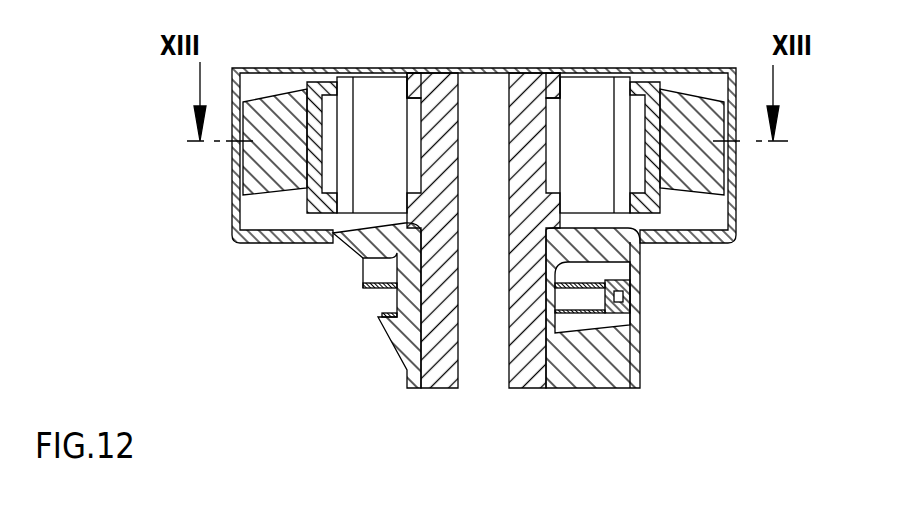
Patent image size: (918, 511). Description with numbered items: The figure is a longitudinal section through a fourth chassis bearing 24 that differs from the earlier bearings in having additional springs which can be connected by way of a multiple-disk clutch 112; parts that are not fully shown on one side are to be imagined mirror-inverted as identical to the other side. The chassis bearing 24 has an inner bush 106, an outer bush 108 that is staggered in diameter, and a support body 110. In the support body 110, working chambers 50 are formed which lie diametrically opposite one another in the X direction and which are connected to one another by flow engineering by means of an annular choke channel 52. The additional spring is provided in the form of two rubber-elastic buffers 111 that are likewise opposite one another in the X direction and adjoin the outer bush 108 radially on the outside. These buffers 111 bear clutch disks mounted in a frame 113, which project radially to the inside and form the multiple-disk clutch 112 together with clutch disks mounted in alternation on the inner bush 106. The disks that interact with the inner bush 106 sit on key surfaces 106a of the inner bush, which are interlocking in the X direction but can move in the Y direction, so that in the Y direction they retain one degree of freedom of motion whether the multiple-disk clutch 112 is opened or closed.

The chassis bearing 24 is at (254, 323).
The working chambers 50 is at (380, 297).
The annular choke channel 52 is at (622, 297).
The inner bush 106 is at (522, 360).
The key surfaces 106a is at (543, 133).
The outer bush 108 is at (633, 373).
The support body 110 is at (693, 250).
The rubber-elastic buffers 111 is at (272, 165).
The multiple-disk clutch 112 is at (382, 170).
The frame 113 is at (650, 80).